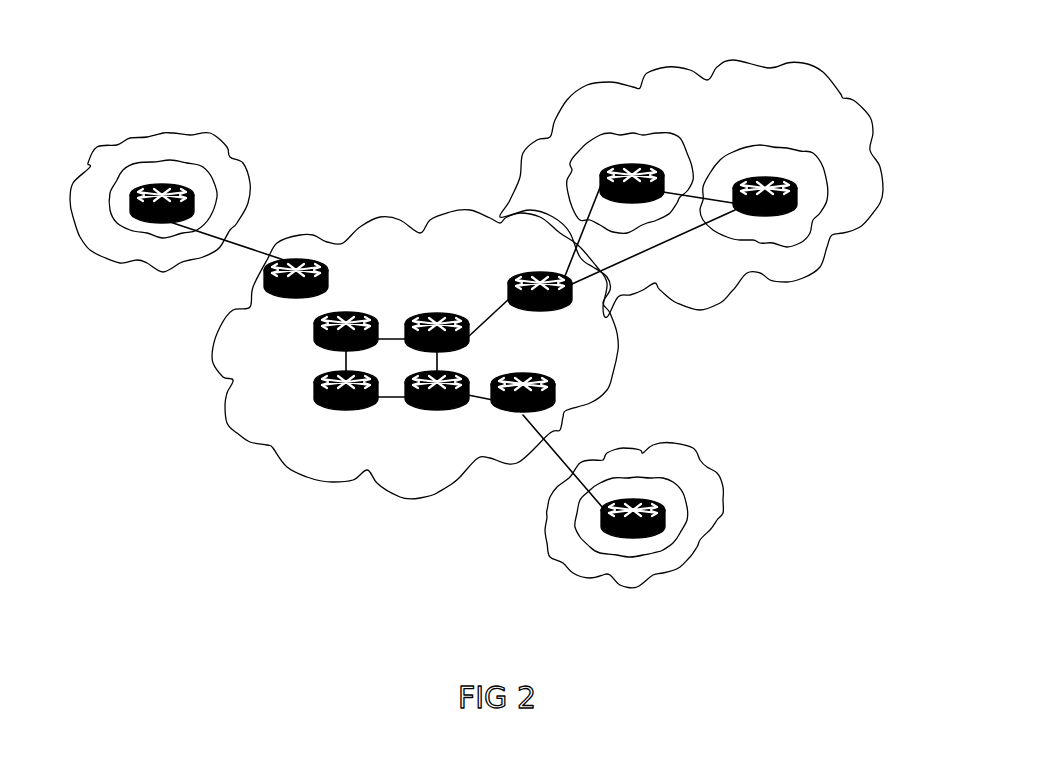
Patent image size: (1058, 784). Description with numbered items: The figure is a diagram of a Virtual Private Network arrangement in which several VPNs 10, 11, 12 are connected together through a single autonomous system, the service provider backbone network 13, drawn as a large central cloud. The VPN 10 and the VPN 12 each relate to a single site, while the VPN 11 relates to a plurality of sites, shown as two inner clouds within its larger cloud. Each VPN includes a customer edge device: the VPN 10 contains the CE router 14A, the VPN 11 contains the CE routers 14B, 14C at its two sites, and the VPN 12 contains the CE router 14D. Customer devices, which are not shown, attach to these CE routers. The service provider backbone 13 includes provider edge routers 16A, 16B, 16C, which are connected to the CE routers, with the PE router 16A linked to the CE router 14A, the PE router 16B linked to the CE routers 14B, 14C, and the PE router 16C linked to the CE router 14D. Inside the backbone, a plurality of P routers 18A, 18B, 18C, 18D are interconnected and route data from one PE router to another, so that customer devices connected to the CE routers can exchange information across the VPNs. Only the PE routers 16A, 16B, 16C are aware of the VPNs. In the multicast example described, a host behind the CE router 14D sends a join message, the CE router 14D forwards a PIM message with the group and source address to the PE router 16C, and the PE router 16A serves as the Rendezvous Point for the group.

The VPN 10 is at (162, 132).
The VPN 11 is at (883, 190).
The VPN 12 is at (727, 518).
The service provider backbone network 13 is at (417, 507).
The customer edge device 14A is at (131, 195).
The customer edge device 14B is at (600, 163).
The customer edge device 14C is at (787, 213).
The customer edge device 14D is at (653, 533).
The provider edge router 16A is at (294, 300).
The provider edge router 16B is at (562, 308).
The provider edge router 16C is at (556, 382).
The P router 18A is at (368, 312).
The P router 18B is at (412, 313).
The P router 18C is at (320, 407).
The P router 18D is at (413, 407).